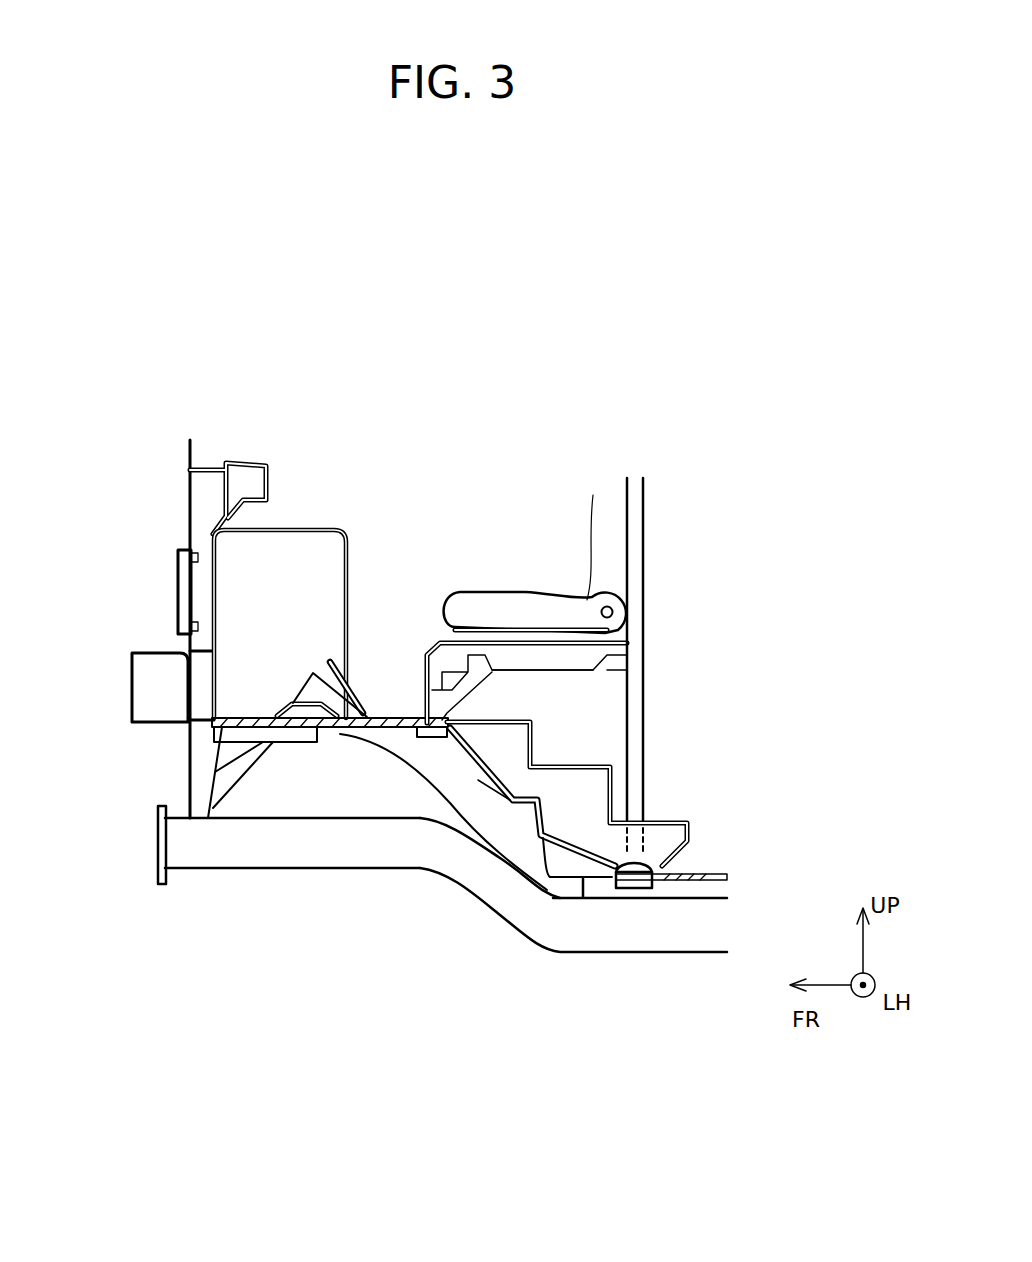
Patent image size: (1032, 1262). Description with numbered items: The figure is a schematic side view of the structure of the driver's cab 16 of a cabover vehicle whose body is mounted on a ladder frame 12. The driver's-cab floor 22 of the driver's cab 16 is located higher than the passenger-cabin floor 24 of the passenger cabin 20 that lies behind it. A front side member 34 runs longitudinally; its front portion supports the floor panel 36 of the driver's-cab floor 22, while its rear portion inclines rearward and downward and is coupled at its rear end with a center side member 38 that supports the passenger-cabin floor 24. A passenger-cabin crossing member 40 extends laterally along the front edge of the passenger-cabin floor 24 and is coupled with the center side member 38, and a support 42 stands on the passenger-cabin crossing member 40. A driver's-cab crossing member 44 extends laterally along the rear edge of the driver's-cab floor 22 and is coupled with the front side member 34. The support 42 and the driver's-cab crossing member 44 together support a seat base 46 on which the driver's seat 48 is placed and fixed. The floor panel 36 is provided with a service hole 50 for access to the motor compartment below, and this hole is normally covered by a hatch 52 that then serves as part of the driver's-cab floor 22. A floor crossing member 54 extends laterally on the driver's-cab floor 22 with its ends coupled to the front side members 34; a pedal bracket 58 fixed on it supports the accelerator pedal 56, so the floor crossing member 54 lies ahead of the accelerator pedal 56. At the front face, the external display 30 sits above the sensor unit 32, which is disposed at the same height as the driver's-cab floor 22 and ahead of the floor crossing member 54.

The ladder frame 12 is at (594, 940).
The driver's cab 16 is at (414, 445).
The passenger cabin 20 is at (739, 536).
The driver's-cab floor 22 is at (377, 672).
The passenger-cabin floor 24 is at (690, 880).
The external display 30 is at (178, 585).
The sensor unit 32 is at (140, 683).
The front side member 34 is at (347, 735).
The floor panel 36 is at (252, 718).
The center side member 38 is at (694, 893).
The passenger-cabin crossing member 40 is at (632, 890).
The support 42 is at (637, 720).
The driver's-cab crossing member 44 is at (437, 738).
The seat base 46 is at (527, 682).
The driver's seat 48 is at (530, 603).
The service hole 50 is at (432, 605).
The hatch 52 is at (408, 718).
The floor crossing member 54 is at (292, 703).
The accelerator pedal 56 is at (356, 690).
The pedal bracket 58 is at (327, 673).